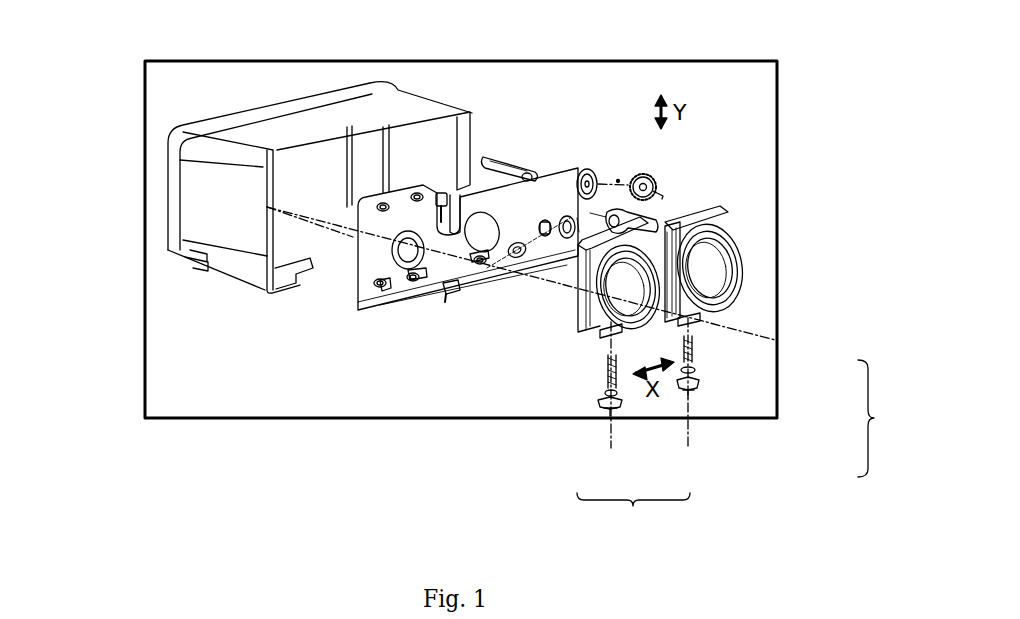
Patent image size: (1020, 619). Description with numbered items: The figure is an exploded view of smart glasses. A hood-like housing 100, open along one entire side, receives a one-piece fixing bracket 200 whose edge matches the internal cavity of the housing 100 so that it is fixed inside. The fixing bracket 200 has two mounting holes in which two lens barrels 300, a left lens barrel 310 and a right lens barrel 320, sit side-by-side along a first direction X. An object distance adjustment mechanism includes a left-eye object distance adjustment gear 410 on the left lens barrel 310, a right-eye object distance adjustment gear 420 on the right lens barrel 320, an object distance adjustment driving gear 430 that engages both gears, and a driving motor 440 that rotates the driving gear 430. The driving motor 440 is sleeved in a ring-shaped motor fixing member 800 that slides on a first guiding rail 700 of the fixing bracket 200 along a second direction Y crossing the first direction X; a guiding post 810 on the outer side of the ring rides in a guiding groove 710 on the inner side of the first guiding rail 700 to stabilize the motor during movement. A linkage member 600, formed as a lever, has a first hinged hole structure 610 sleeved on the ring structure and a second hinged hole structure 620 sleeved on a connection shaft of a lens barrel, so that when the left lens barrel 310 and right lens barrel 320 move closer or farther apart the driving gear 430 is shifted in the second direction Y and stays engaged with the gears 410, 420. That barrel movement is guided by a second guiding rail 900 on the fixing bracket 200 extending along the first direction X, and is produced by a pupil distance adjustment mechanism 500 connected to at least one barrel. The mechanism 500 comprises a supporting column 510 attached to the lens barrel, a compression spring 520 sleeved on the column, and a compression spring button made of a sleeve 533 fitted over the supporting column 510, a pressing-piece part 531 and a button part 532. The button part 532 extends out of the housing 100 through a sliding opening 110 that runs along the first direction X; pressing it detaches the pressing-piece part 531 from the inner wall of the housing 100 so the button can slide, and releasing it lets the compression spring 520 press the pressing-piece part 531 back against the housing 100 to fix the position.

The housing 100 is at (212, 150).
The sliding opening 110 is at (345, 240).
The fixing bracket 200 is at (378, 297).
The lens barrels 300 is at (707, 373).
The left lens barrel 310 is at (625, 265).
The right lens barrel 320 is at (743, 351).
The left-eye object distance adjustment gear 410 is at (680, 237).
The right-eye object distance adjustment gear 420 is at (682, 257).
The object distance adjustment driving gear 430 is at (660, 178).
The driving motor 440 is at (518, 163).
The pupil distance adjustment mechanism 500 is at (759, 398).
The supporting column 510 is at (700, 321).
The compression spring 520 is at (700, 345).
The pressing-piece part 531 is at (700, 385).
The button part 532 is at (707, 392).
The sleeve 533 is at (698, 369).
The linkage member 600 is at (700, 223).
The first hinged hole structure 610 is at (540, 230).
The second hinged hole structure 620 is at (578, 225).
The first guiding rail 700 is at (445, 195).
The guiding groove 710 is at (455, 212).
The motor fixing member 800 is at (630, 178).
The guiding post 810 is at (578, 178).
The second guiding rail 900 is at (453, 215).